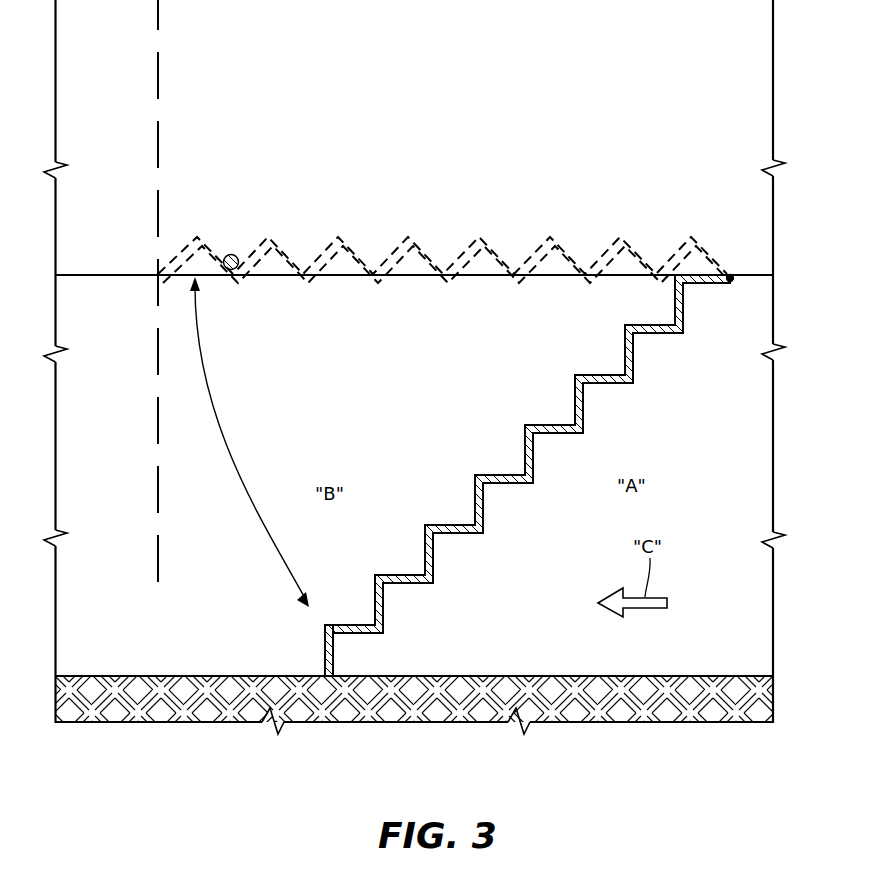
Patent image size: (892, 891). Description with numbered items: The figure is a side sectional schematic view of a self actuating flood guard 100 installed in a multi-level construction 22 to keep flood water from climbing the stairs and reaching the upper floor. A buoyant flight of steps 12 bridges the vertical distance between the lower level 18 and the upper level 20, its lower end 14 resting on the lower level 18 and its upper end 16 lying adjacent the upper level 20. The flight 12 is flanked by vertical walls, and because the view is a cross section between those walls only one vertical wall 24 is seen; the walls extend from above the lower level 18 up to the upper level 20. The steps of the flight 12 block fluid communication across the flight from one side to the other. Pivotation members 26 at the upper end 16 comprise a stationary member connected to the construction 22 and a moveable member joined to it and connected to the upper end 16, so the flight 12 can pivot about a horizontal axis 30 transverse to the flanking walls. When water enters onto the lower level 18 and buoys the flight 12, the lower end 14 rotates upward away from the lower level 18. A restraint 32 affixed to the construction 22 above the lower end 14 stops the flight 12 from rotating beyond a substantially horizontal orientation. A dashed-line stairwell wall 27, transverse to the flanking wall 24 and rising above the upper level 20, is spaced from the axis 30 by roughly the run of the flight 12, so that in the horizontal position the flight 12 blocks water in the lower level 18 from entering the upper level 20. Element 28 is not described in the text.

The self actuating flood guard 100 is at (546, 120).
The multi-level construction 22 is at (773, 88).
The upper level 20 is at (97, 272).
The wall 27 is at (160, 131).
The folding member 28 is at (184, 250).
The restraint 32 is at (232, 255).
The pivotation members 26 is at (732, 275).
The horizontal axis 30 is at (733, 281).
The upper end 16 is at (705, 287).
The vertical wall 24 is at (360, 363).
The buoyant flight of steps 12 is at (518, 421).
The lower end 14 is at (323, 667).
The lower level 18 is at (514, 675).